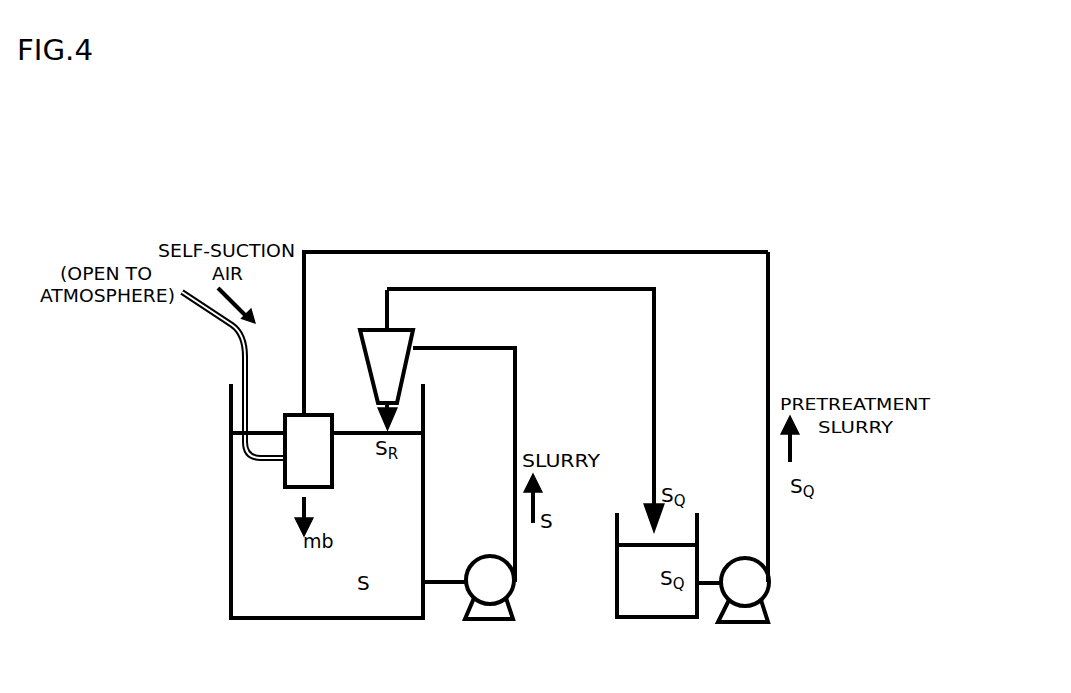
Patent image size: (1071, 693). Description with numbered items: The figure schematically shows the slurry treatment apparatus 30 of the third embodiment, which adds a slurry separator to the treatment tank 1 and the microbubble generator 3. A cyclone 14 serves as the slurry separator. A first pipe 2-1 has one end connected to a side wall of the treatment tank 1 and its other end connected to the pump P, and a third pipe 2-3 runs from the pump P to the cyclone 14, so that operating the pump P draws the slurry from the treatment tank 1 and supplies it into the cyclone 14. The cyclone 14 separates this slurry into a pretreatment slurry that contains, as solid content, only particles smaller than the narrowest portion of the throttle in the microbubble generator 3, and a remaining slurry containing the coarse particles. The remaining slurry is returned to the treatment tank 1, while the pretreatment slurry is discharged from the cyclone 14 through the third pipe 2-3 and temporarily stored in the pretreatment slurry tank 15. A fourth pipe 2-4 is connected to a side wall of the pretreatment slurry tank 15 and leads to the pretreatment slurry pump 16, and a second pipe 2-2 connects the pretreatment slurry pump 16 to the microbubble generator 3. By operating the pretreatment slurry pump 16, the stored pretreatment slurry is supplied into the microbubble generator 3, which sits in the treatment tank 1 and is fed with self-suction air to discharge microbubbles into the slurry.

The slurry treatment apparatus 30 is at (528, 233).
The treatment tank 1 is at (275, 576).
The microbubble generator 3 is at (300, 473).
The cyclone 14 is at (362, 319).
The first pipe 2-1 is at (445, 590).
The second pipe 2-2 is at (770, 370).
The third pipe 2-3 is at (515, 403).
The fourth pipe 2-4 is at (706, 590).
The pump P is at (530, 580).
The pretreatment slurry tank 15 is at (645, 590).
The pretreatment slurry pump 16 is at (745, 585).